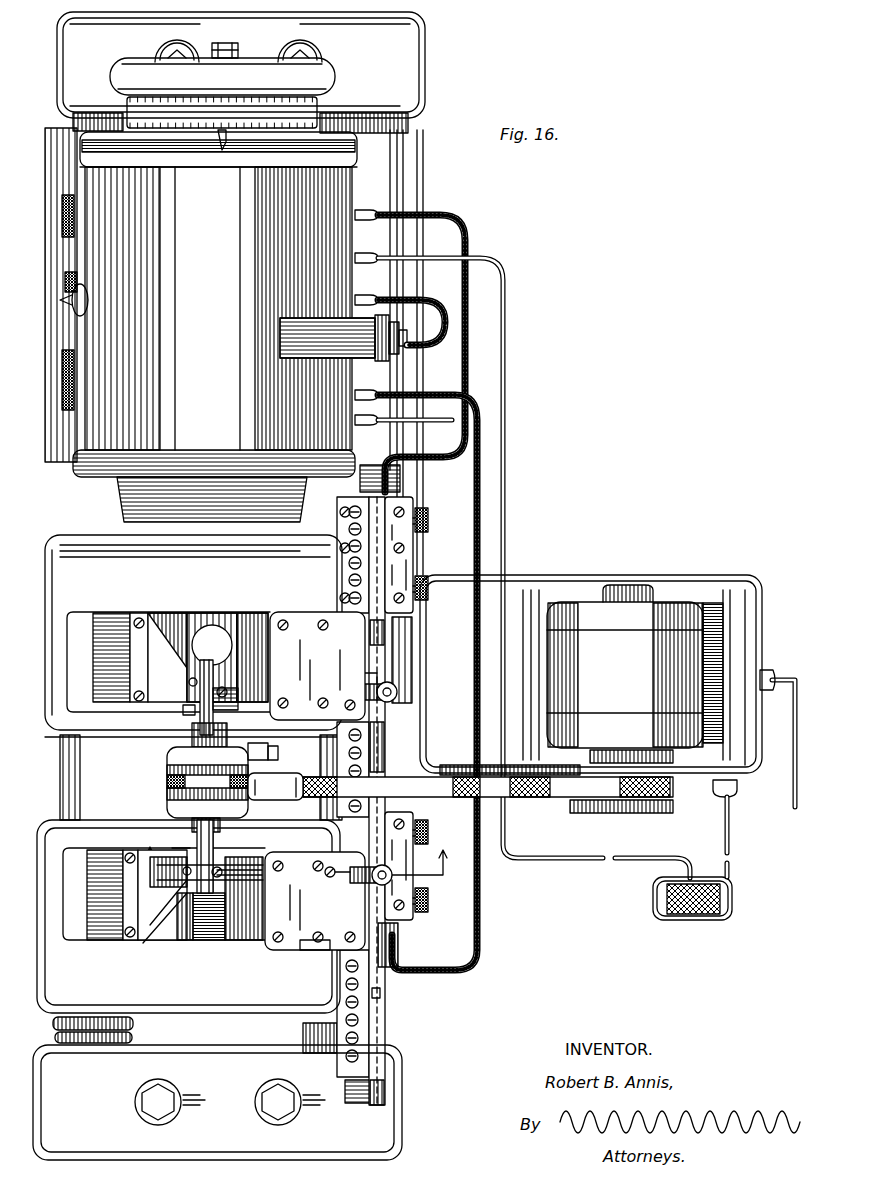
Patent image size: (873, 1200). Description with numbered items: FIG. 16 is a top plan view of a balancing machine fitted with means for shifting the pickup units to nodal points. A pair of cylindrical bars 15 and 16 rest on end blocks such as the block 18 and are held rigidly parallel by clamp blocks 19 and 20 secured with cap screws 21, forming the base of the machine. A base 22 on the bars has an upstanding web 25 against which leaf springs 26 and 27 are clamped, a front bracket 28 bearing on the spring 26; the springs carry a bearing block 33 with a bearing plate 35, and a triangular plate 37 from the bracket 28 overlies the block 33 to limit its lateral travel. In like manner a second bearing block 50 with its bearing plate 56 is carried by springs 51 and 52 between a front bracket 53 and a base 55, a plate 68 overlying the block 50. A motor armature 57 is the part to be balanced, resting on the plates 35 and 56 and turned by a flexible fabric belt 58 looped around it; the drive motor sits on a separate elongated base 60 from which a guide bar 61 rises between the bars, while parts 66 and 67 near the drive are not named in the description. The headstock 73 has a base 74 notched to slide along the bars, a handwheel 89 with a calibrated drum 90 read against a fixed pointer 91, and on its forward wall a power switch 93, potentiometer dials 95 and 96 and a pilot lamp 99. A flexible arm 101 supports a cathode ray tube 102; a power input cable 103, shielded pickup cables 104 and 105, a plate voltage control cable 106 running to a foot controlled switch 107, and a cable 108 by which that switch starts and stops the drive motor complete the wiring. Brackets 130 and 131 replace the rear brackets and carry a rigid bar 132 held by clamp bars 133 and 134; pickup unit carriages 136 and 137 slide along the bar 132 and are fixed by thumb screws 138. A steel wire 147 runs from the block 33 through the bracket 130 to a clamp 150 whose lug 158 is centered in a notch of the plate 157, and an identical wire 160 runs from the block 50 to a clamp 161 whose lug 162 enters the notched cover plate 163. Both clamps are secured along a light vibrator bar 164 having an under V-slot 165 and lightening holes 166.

The bar 15 is at (72, 776).
The bar 16 is at (408, 128).
The end block 18 is at (296, 871).
The clamp block 19 is at (414, 58).
The clamp block 20 is at (385, 1126).
The cap screws 21 is at (174, 52).
The base 22 is at (47, 990).
The web 25 is at (192, 942).
The leaf spring 26 is at (182, 940).
The leaf spring 27 is at (214, 935).
The front bracket 28 is at (107, 935).
The bearing block 33 is at (215, 890).
The bearing plate 35 is at (178, 837).
The plate 37 is at (150, 937).
The second bearing block 50 is at (212, 668).
The spring 51 is at (193, 620).
The spring 52 is at (222, 620).
The front bracket 53 is at (110, 623).
The base 55 is at (63, 547).
The bearing plate 56 is at (183, 710).
The motor armature 57 is at (183, 762).
The flexible fabric belt 58 is at (170, 788).
The elongated base 60 is at (510, 576).
The guide bar 61 is at (262, 750).
The bearing 66 is at (277, 788).
The collar 67 is at (598, 810).
The plate 68 is at (157, 662).
The headstock 73 is at (215, 327).
The base 74 is at (418, 178).
The handwheel 89 is at (328, 87).
The drum 90 is at (322, 113).
The fixed pointer 91 is at (223, 152).
The power line input control switch 93 is at (83, 286).
The potentiometer control and indicating dial 95 is at (82, 212).
The potentiometer control and indicating dial 96 is at (83, 378).
The pilot lamp 99 is at (88, 302).
The flexible arm 101 is at (440, 340).
The cathode ray tube 102 is at (290, 346).
The power input cable 103 is at (428, 416).
The shielded conductor cable 104 is at (480, 898).
The shielded conductor cable 105 is at (482, 283).
The cathode ray plate voltage control cable 106 is at (507, 333).
The foot controlled switch 107 is at (680, 915).
The cable 108 is at (728, 870).
The bracket 130 is at (255, 938).
The bracket 131 is at (254, 613).
The rigid bar 132 is at (402, 471).
The clamp bar 133 is at (400, 946).
The clamp bar 134 is at (404, 652).
The pickup unit carriage 136 is at (410, 860).
The pickup unit carriage 137 is at (410, 552).
The thumb screws 138 is at (429, 518).
The steel wire 147 is at (240, 868).
The clamp 150 is at (366, 878).
The plate 157 is at (317, 940).
The lug 158 is at (366, 874).
The steel wire 160 is at (245, 692).
The clamp 161 is at (357, 676).
The lug 162 is at (370, 690).
The cover plate 163 is at (290, 625).
The vibrator bar 164 is at (387, 762).
The slot 165 is at (363, 993).
The holes 166 is at (350, 514).